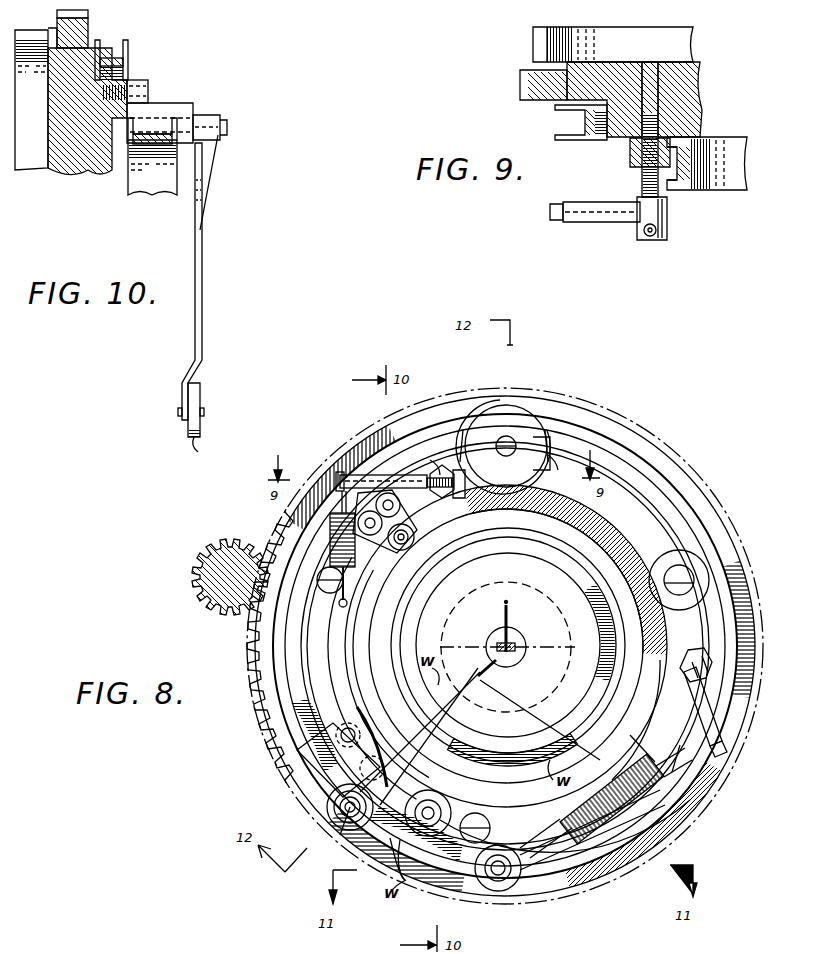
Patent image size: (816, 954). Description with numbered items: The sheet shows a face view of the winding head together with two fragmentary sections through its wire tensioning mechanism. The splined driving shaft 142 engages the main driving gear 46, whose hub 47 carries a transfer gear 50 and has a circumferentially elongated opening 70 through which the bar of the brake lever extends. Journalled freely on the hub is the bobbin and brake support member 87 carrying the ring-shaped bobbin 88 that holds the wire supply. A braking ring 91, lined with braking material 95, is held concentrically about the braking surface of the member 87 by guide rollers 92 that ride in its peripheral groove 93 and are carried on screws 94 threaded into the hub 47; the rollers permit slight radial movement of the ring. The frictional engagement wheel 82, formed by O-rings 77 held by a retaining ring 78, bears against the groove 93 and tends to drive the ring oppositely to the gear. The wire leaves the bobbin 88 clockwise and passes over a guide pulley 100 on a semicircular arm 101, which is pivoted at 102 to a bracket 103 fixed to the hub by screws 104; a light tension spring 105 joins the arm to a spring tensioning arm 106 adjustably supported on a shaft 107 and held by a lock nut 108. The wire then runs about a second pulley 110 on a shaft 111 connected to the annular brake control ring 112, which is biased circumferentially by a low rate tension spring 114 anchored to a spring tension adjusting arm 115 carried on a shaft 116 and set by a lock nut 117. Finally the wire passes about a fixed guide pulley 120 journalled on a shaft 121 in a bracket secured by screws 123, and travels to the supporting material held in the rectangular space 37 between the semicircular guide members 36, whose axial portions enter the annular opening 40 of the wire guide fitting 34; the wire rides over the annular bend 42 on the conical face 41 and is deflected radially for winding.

In FIG. 8, the wire guide fitting 34 is at (533, 678).
In FIG. 8, the support material guide members 36 is at (498, 636).
In FIG. 8, the rectangular space 37 is at (520, 646).
In FIG. 8, the annular opening 40 is at (510, 634).
In FIG. 8, the forward conical face 41 is at (400, 698).
In FIG. 8, the annular bend 42 is at (503, 670).
In FIG. 10, the main driving gear 46 is at (88, 25).
In FIG. 9, the main driving gear 46 is at (535, 98).
In FIG. 8, the main driving gear 46 is at (710, 790).
In FIG. 10, the hub 47 is at (75, 165).
In FIG. 9, the hub 47 is at (598, 64).
In FIG. 8, the hub 47 is at (618, 490).
In FIG. 10, the transfer gear 50 is at (46, 30).
In FIG. 9, the transfer gear 50 is at (533, 42).
In FIG. 8, the circumferentially elongated opening 70 is at (559, 469).
In FIG. 8, the O-rings 77 is at (500, 406).
In FIG. 8, the retaining ring 78 is at (530, 430).
In FIG. 8, the frictional engagement wheel 82 is at (538, 405).
In FIG. 8, the bobbin and brake support member 87 is at (587, 708).
In FIG. 8, the ring-shaped bobbin 88 is at (620, 708).
In FIG. 10, the braking ring 91 is at (150, 160).
In FIG. 9, the braking ring 91 is at (680, 190).
In FIG. 8, the braking ring 91 is at (662, 633).
In FIG. 8, the guide rollers 92 is at (710, 579).
In FIG. 10, the peripheral groove 93 is at (158, 134).
In FIG. 9, the peripheral groove 93 is at (678, 176).
In FIG. 8, the peripheral groove 93 is at (628, 550).
In FIG. 8, the screws 94 is at (686, 577).
In FIG. 8, the braking material 95 is at (612, 530).
In FIG. 10, the guide pulley 100 is at (201, 401).
In FIG. 8, the guide pulley 100 is at (430, 790).
In FIG. 10, the semicircular arm 101 is at (203, 296).
In FIG. 8, the semicircular arm 101 is at (345, 680).
In FIG. 10, the pivot 102 is at (228, 128).
In FIG. 8, the pivot 102 is at (418, 520).
In FIG. 10, the bracket 103 is at (190, 104).
In FIG. 8, the bracket 103 is at (420, 480).
In FIG. 10, the screws 104 is at (160, 70).
In FIG. 8, the screws 104 is at (358, 548).
In FIG. 9, the tension spring 105 is at (557, 222).
In FIG. 8, the tension spring 105 is at (330, 525).
In FIG. 9, the spring tensioning arm 106 is at (595, 222).
In FIG. 8, the spring tensioning arm 106 is at (362, 472).
In FIG. 9, the shaft 107 is at (642, 178).
In FIG. 8, the shaft 107 is at (470, 470).
In FIG. 9, the lock nut 108 is at (630, 158).
In FIG. 8, the lock nut 108 is at (432, 460).
In FIG. 8, the second pulley 110 is at (505, 892).
In FIG. 8, the shaft 111 is at (522, 866).
In FIG. 10, the brake control ring 112 is at (128, 46).
In FIG. 9, the brake control ring 112 is at (565, 140).
In FIG. 8, the brake control ring 112 is at (590, 870).
In FIG. 8, the tension spring 114 is at (648, 770).
In FIG. 8, the spring tension adjusting arm 115 is at (730, 748).
In FIG. 8, the shaft 116 is at (700, 664).
In FIG. 8, the lock nut 117 is at (698, 648).
In FIG. 8, the fixed guide pulley 120 is at (335, 810).
In FIG. 8, the shaft 121 is at (340, 835).
In FIG. 8, the screws 123 is at (346, 748).
In FIG. 8, the splined driving shaft 142 is at (202, 552).